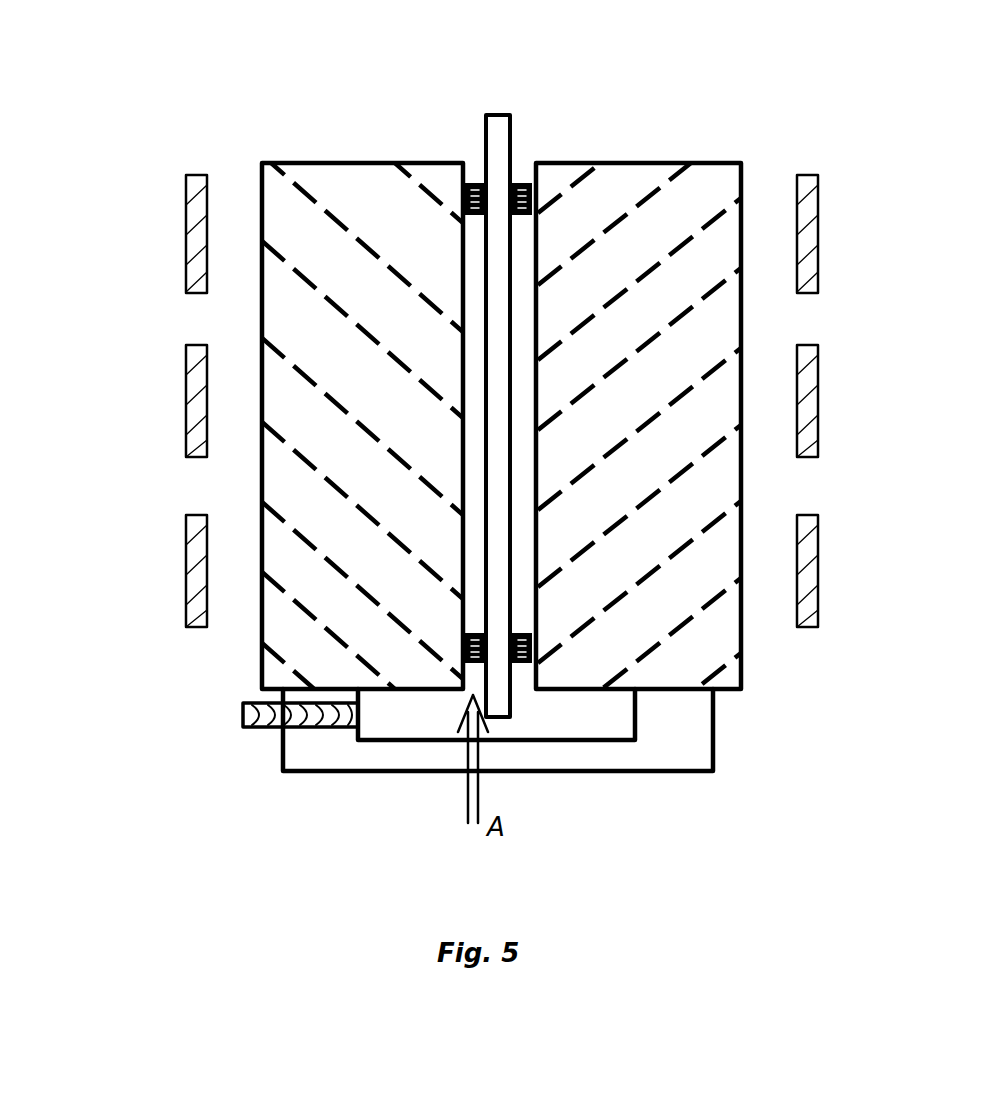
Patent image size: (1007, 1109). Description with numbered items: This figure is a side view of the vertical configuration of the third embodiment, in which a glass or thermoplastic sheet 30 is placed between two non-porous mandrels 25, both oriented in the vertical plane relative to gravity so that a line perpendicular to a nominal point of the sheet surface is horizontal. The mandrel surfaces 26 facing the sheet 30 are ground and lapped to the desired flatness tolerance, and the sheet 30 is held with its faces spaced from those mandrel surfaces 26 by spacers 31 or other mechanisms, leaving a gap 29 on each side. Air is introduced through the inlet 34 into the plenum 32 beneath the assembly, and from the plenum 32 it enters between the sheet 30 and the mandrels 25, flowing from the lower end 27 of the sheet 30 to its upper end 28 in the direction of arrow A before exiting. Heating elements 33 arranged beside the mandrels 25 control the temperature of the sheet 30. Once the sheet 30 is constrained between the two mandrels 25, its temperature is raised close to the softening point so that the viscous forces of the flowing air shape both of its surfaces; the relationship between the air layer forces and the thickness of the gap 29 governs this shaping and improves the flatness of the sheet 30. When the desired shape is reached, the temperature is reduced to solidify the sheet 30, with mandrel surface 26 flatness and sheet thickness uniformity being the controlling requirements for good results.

The mandrels 25 is at (272, 182).
The mandrel surfaces 26 is at (450, 516).
The lower end 27 is at (460, 683).
The upper end 28 is at (478, 167).
The gap 29 is at (478, 425).
The sheet 30 is at (502, 110).
The spacers 31 is at (520, 648).
The plenum 32 is at (600, 712).
The heating elements 33 is at (183, 235).
The inlet 34 is at (243, 716).